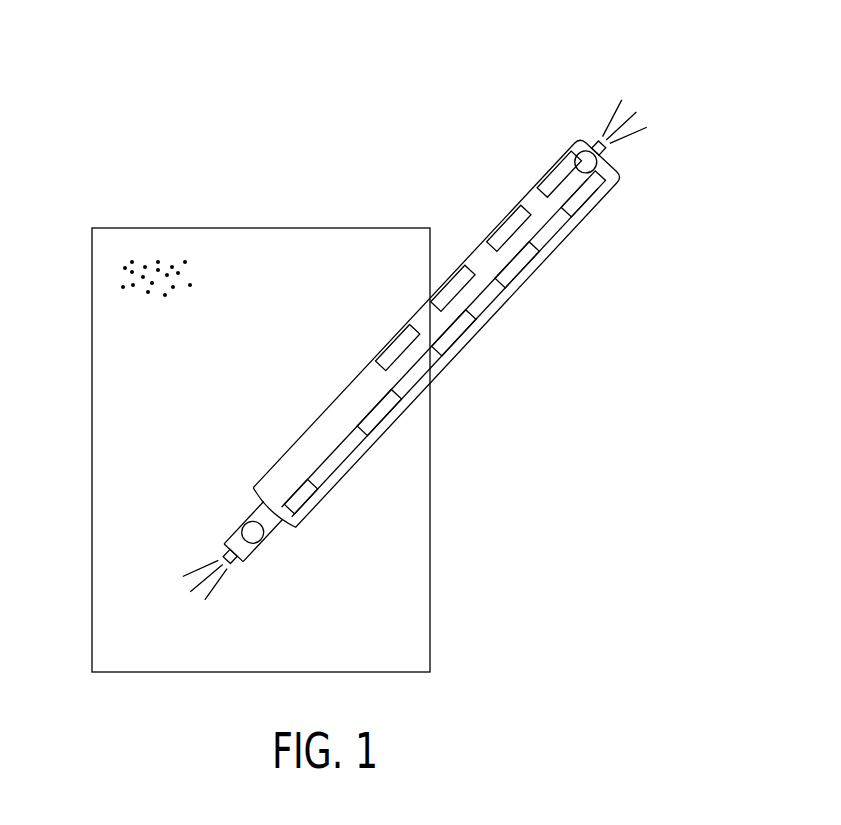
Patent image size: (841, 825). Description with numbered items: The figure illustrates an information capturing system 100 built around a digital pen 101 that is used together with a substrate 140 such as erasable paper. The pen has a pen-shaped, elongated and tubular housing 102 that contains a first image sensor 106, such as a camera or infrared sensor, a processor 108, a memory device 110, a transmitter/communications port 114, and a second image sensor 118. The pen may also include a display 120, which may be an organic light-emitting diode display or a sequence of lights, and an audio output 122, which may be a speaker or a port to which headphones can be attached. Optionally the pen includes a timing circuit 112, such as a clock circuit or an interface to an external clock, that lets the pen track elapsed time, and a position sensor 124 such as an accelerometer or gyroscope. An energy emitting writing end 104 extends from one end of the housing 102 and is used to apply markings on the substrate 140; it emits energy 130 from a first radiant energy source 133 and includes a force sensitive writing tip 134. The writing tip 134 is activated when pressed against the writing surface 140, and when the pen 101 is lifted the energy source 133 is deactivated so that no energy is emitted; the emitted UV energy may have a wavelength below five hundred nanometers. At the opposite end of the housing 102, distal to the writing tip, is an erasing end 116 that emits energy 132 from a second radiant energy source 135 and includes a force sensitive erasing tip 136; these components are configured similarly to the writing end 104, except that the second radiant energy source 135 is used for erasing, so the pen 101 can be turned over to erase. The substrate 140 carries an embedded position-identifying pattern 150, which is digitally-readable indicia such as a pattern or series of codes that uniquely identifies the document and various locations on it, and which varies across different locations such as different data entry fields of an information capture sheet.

The information capturing system 100 is at (153, 127).
The digital pen 101 is at (583, 123).
The housing 102 is at (298, 425).
The energy emitting writing end 104 is at (251, 519).
The first image sensor 106 is at (304, 516).
The processor 108 is at (383, 430).
The memory device 110 is at (475, 345).
The timing circuit 112 is at (535, 272).
The transmitter/communications port 114 is at (598, 205).
The erasing end 116 is at (612, 160).
The second image sensor 118 is at (548, 160).
The display 120 is at (510, 208).
The audio output 122 is at (465, 262).
The position sensor 124 is at (392, 330).
The energy 130 is at (187, 563).
The energy 132 is at (628, 105).
The first radiant energy source 133 is at (258, 547).
The force sensitive writing tip 134 is at (231, 570).
The second radiant energy source 135 is at (600, 170).
The force sensitive erasing tip 136 is at (598, 138).
The substrate 140 is at (92, 617).
The position-identifying pattern 150 is at (147, 265).